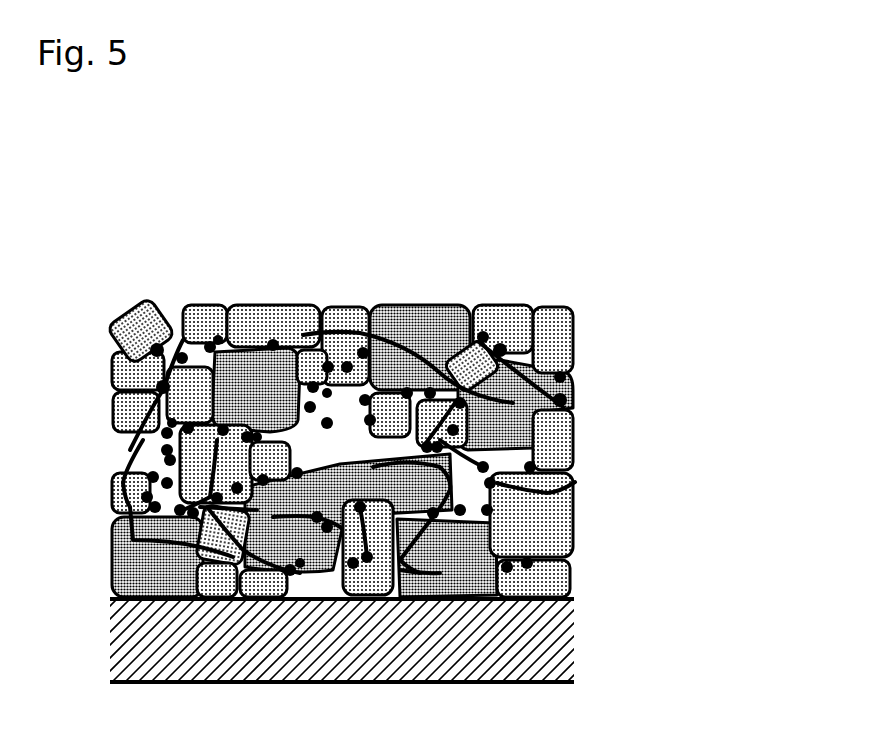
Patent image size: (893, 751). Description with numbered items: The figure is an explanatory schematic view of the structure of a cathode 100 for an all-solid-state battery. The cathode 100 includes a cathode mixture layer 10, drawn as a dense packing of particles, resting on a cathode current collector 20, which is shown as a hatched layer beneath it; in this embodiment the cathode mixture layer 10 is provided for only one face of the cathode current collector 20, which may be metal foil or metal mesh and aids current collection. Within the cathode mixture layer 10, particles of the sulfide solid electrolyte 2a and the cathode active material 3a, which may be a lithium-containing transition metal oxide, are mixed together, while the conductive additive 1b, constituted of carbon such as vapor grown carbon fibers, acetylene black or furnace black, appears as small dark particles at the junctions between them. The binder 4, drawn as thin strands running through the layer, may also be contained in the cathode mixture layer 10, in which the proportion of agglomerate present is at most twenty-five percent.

The cathode 100 is at (370, 226).
The cathode mixture layer 10 is at (688, 303).
The cathode current collector 20 is at (560, 645).
The sulfide solid electrolyte 2a is at (550, 324).
The cathode active material 3a is at (515, 437).
The conductive additive 1b is at (555, 402).
The binder 4 is at (575, 482).